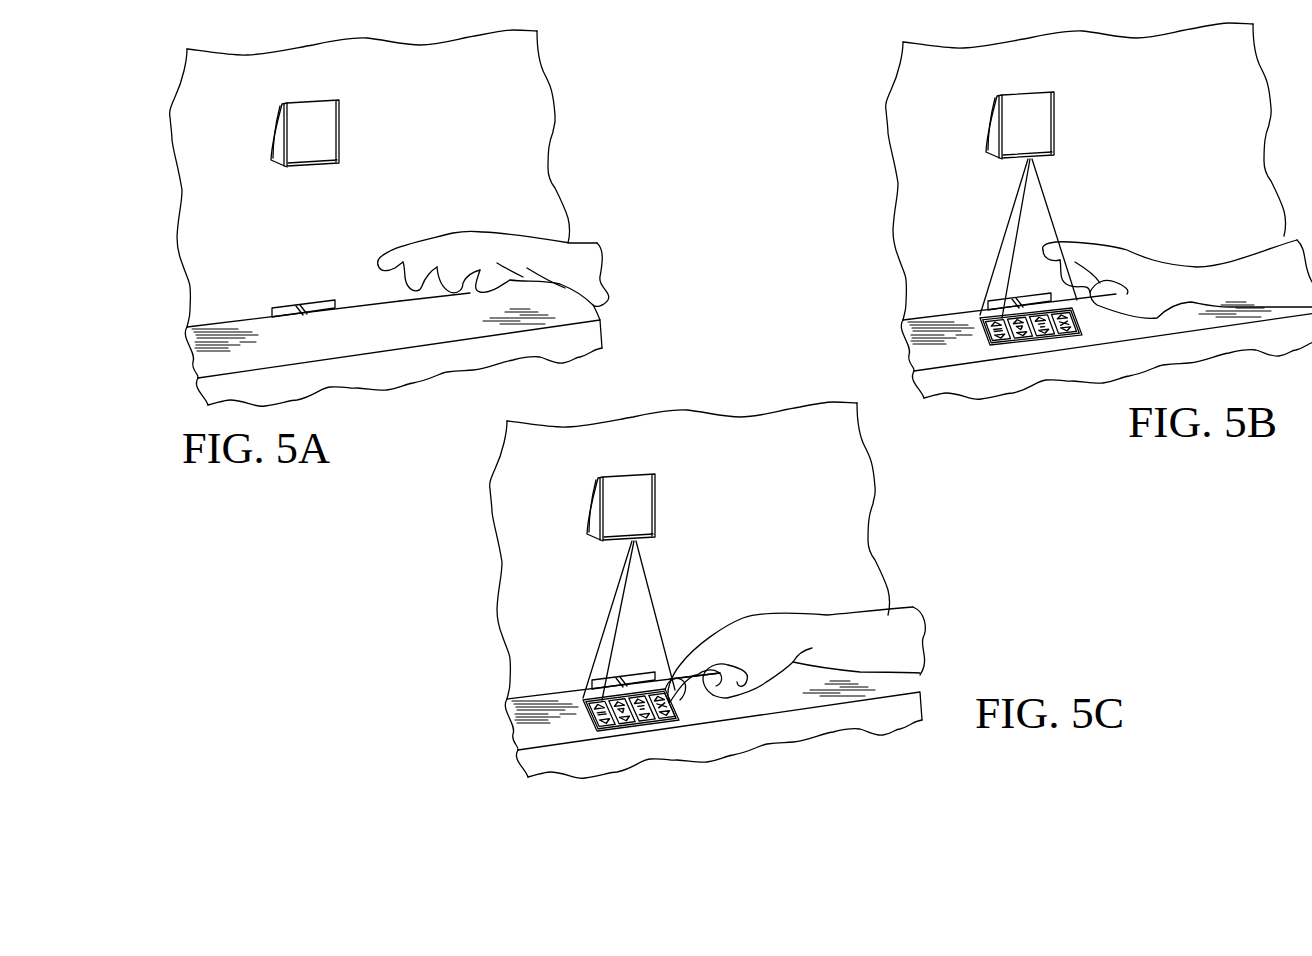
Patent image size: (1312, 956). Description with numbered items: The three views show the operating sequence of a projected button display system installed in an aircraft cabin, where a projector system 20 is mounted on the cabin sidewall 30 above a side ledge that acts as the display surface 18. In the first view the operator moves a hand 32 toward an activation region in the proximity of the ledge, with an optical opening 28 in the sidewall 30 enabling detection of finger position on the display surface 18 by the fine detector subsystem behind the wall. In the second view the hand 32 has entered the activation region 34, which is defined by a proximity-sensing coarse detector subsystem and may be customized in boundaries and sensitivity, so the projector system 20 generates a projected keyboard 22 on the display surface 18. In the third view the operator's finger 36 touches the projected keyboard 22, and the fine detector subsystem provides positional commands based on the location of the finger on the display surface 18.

In FIG. 5A, the display surface 18 is at (190, 356).
In FIG. 5B, the display surface 18 is at (910, 340).
In FIG. 5A, the projector system 20 is at (339, 125).
In FIG. 5B, the projector system 20 is at (1035, 127).
In FIG. 5C, the projector system 20 is at (637, 505).
In FIG. 5B, the projected keyboard 22 is at (1010, 347).
In FIG. 5C, the projected keyboard 22 is at (582, 718).
In FIG. 5A, the optical opening 28 is at (280, 302).
In FIG. 5A, the sidewall 30 is at (555, 115).
In FIG. 5A, the operator's hand 32 is at (465, 243).
In FIG. 5B, the operator's hand 32 is at (1140, 268).
In FIG. 5B, the activation region 34 is at (1018, 233).
In FIG. 5C, the activation region 34 is at (612, 622).
In FIG. 5C, the operator's finger 36 is at (675, 697).